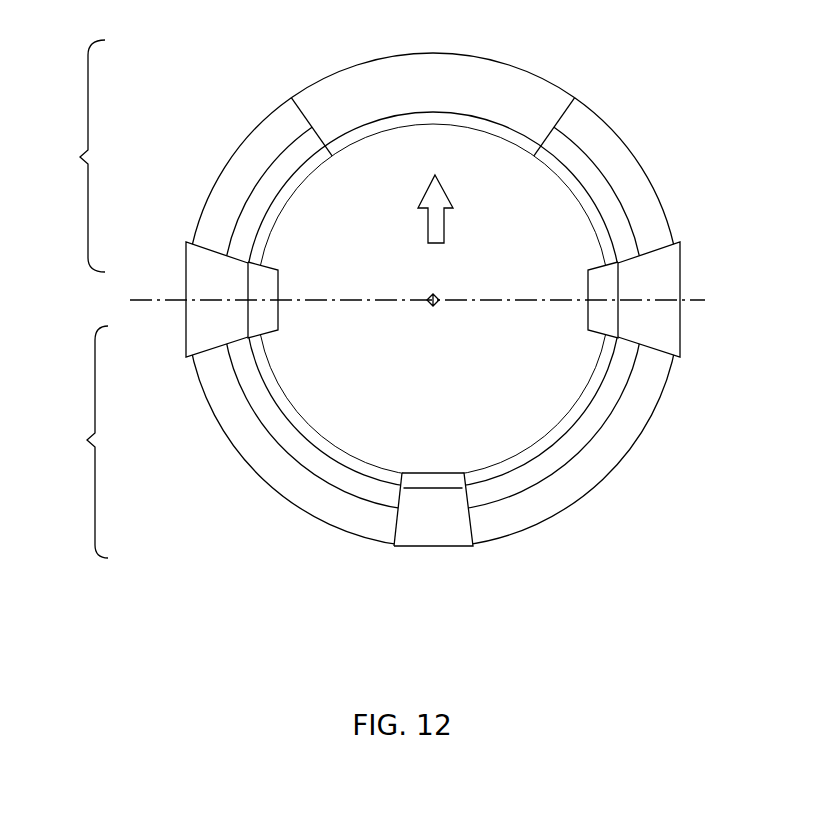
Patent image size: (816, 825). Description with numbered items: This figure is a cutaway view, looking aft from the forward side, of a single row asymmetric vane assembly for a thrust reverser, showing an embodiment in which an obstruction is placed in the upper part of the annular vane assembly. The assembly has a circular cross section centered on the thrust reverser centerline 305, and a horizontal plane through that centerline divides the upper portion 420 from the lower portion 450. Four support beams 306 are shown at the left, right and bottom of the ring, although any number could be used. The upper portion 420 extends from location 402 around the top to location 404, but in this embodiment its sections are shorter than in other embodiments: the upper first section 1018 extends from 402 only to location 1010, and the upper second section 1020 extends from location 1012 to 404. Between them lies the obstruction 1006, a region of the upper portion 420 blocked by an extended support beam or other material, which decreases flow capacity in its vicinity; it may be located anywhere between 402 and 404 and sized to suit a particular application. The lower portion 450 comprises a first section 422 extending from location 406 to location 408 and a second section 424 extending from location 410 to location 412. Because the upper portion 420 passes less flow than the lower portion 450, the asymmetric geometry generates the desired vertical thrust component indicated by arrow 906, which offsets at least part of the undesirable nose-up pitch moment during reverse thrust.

The thrust reverser centerline 305 is at (436, 297).
The support beam 306 is at (186, 326).
The upper portion boundary location 402 is at (186, 240).
The upper portion boundary location 404 is at (680, 242).
The first section boundary location 406 is at (674, 317).
The first section boundary location 408 is at (474, 546).
The second section boundary location 410 is at (397, 548).
The second section boundary location 412 is at (186, 358).
The upper portion 420 is at (65, 156).
The first section 422 is at (633, 450).
The second section 424 is at (285, 497).
The lower portion 450 is at (72, 442).
The arrow 906 is at (442, 198).
The obstruction 1006 is at (455, 55).
The upper first section end location 1010 is at (290, 96).
The upper second section start location 1012 is at (574, 93).
The upper first section 1018 is at (242, 140).
The upper second section 1020 is at (640, 163).